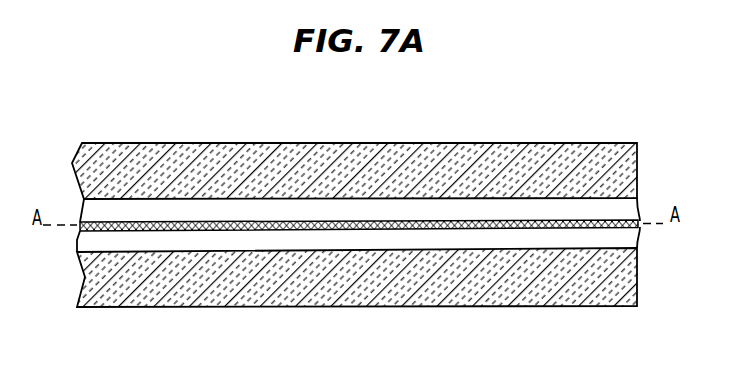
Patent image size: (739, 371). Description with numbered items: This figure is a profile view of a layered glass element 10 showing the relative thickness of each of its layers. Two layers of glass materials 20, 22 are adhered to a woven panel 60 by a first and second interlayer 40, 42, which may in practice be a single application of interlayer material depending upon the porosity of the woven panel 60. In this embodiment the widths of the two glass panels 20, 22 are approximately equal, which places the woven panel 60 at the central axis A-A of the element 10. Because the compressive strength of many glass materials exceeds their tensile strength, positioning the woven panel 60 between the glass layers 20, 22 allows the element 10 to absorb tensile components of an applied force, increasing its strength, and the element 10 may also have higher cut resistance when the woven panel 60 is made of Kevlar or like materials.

The layered glass element 10 is at (592, 98).
The layer of glass materials 20 is at (232, 153).
The layer of glass materials 22 is at (193, 295).
The first interlayer 40 is at (528, 213).
The second interlayer 42 is at (529, 233).
The woven panel 60 is at (638, 220).